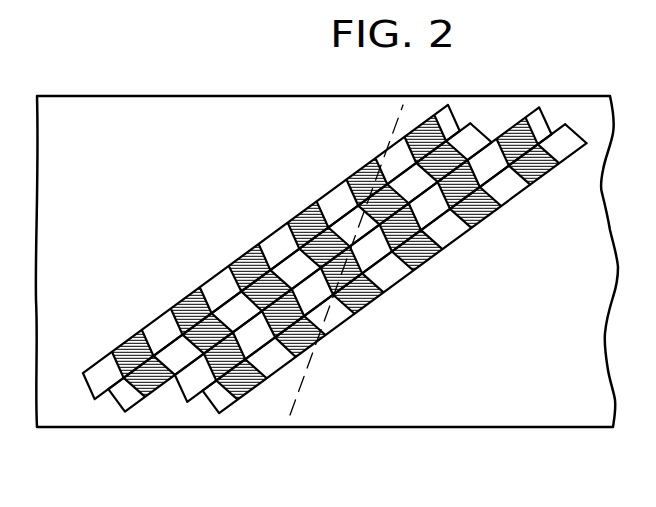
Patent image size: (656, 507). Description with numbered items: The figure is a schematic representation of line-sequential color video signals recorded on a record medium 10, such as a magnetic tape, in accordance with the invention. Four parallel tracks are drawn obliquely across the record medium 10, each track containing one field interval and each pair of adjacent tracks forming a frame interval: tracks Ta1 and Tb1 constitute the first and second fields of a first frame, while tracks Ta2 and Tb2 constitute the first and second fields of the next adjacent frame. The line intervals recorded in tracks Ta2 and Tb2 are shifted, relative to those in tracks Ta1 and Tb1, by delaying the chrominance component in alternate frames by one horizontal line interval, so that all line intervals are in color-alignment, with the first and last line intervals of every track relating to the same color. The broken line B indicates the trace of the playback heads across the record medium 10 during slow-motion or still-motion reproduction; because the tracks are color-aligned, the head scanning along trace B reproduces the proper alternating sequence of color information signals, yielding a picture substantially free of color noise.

The record medium 10 is at (180, 97).
The track Ta1 is at (94, 399).
The track Tb1 is at (125, 412).
The track Ta2 is at (187, 402).
The track Tb2 is at (219, 413).
The trace B is at (294, 402).